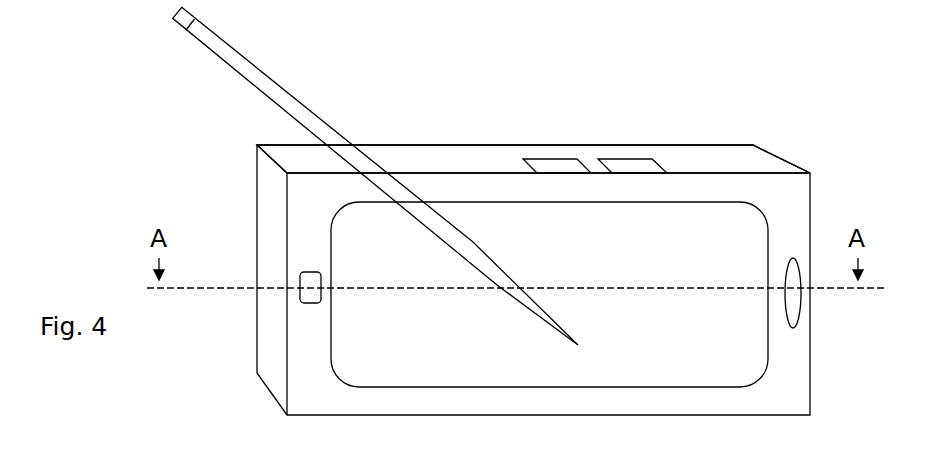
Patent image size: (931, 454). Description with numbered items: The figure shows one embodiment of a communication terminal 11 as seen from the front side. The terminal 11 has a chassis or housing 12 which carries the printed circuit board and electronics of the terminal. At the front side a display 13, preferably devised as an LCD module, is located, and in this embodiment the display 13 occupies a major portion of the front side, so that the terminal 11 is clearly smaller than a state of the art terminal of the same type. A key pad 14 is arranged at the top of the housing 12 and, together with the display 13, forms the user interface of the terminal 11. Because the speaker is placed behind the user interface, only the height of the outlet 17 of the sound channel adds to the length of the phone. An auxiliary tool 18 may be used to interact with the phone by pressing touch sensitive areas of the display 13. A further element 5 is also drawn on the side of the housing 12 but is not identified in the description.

The side button 5 is at (802, 302).
The communication terminal 11 is at (222, 197).
The housing 12 is at (410, 144).
The display 13 is at (635, 266).
The key pad 14 is at (582, 130).
The outlet of sound channel 17 is at (307, 303).
The auxiliary tool 18 is at (184, 31).